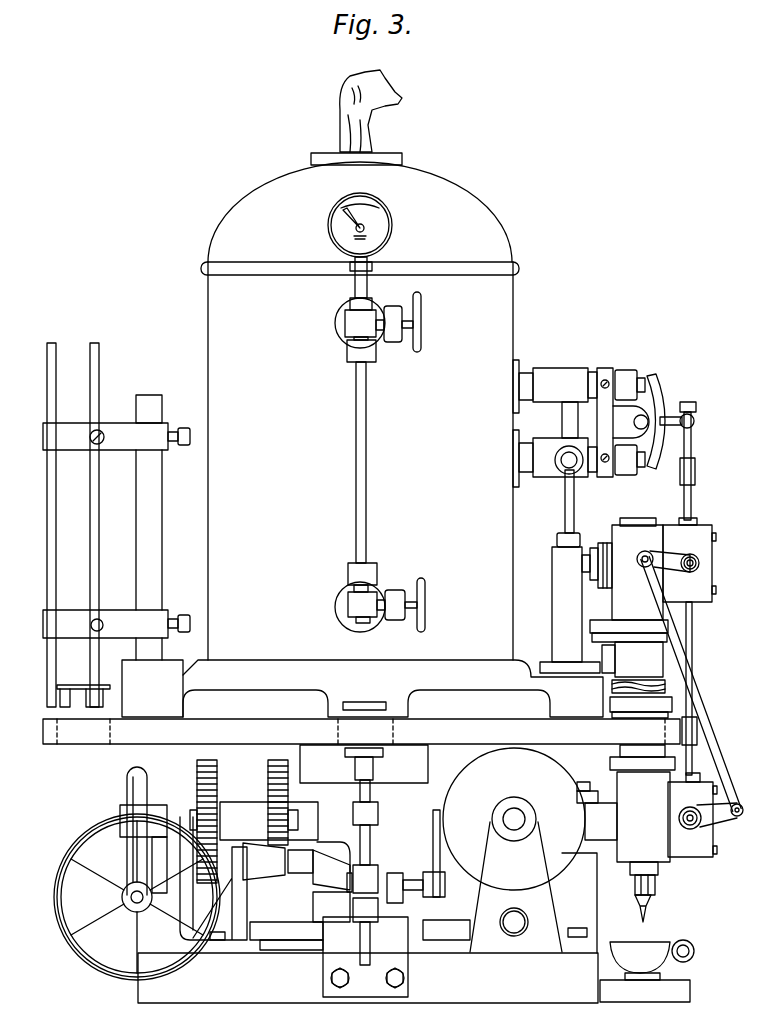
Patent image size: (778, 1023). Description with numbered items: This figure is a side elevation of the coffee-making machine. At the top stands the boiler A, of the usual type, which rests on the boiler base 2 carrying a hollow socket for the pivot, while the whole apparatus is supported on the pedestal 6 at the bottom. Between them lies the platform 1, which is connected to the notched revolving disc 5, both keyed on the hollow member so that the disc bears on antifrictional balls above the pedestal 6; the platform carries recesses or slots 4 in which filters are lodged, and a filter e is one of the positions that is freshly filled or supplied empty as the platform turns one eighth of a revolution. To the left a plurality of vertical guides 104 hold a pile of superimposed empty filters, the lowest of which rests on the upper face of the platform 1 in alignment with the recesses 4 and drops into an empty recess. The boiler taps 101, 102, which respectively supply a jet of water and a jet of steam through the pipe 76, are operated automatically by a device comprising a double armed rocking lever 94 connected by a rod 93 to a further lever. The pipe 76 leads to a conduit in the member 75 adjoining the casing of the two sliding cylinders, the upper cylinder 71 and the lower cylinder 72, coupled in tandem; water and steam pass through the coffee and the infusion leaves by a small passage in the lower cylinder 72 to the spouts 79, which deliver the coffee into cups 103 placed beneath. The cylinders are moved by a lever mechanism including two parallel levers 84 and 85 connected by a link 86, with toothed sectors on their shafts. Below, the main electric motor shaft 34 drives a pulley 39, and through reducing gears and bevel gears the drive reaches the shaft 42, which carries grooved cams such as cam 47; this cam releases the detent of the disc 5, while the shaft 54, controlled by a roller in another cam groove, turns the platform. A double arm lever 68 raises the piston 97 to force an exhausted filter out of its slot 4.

The boiler A is at (360, 365).
The platform 1 is at (361, 731).
The boiler base 2 is at (393, 688).
The slot 4 is at (108, 745).
The notched revolving disc 5 is at (294, 922).
The pedestal 6 is at (368, 978).
The main electric motor shaft 34 is at (139, 900).
The pulley 39 is at (54, 902).
The shaft 42 is at (513, 808).
The cam 47 is at (520, 850).
The shaft 54 is at (514, 936).
The double arm lever 68 is at (322, 873).
The upper cylinder 71 is at (620, 528).
The lower cylinder 72 is at (626, 803).
The member 75 is at (561, 584).
The pipe 76 is at (565, 516).
The spouts 79 is at (648, 904).
The lever 84 is at (694, 824).
The lever 85 is at (673, 553).
The link 86 is at (682, 658).
The rod 93 is at (682, 493).
The double armed rocking lever 94 is at (652, 384).
The piston 97 is at (365, 793).
The boiler tap 101 is at (548, 478).
The boiler tap 102 is at (557, 361).
The cups 103 is at (647, 971).
The vertical guides 104 is at (93, 346).
The filter e is at (286, 936).